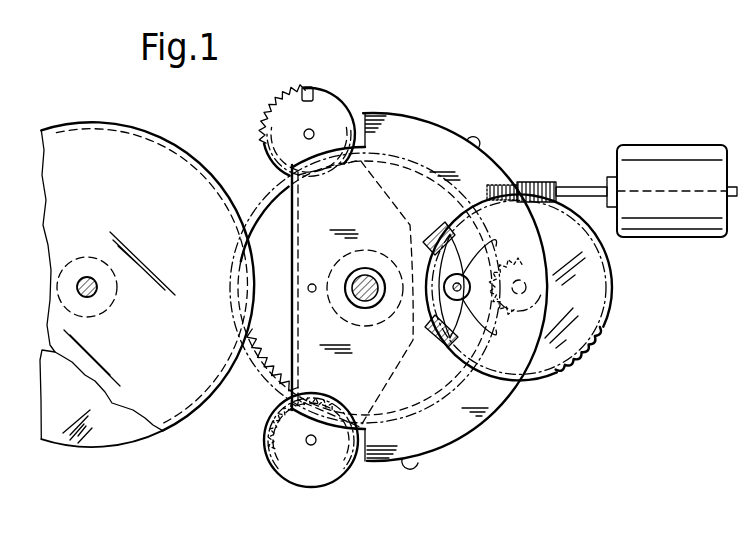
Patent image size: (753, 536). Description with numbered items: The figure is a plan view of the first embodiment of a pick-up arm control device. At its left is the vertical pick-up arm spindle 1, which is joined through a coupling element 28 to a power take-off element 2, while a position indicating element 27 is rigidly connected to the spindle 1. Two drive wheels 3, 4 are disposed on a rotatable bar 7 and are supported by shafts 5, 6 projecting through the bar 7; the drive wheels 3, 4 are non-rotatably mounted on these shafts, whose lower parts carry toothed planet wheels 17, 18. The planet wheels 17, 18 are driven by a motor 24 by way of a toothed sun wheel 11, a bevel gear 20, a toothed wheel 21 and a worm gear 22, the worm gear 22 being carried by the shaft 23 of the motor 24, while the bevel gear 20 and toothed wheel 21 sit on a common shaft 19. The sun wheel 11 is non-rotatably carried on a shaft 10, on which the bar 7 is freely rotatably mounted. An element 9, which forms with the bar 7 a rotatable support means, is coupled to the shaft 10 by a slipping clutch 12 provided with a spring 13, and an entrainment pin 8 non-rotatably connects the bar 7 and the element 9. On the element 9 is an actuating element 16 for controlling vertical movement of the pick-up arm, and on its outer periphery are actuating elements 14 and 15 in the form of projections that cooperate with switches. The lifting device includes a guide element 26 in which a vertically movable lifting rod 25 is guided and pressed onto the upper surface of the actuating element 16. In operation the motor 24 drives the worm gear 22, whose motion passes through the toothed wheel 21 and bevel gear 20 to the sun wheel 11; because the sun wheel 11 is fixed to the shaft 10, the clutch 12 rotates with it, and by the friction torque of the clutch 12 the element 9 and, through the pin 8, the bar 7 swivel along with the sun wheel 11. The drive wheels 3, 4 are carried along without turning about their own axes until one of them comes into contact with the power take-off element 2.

The pick-up arm spindle 1 is at (87, 276).
The power take-off element 2 is at (121, 128).
The drive wheel 3 is at (334, 96).
The drive wheel 4 is at (304, 488).
The shaft 5 is at (310, 129).
The shaft 6 is at (313, 446).
The rotatable bar 7 is at (266, 396).
The entrainment pin 8 is at (312, 284).
The element 9 is at (424, 120).
The shaft 10 is at (372, 306).
The sun wheel 11 is at (275, 221).
The slipping clutch 12 is at (402, 237).
The spring 13 is at (368, 266).
The actuating element 14 is at (475, 138).
The actuating element 15 is at (412, 466).
The actuating element 16 is at (432, 348).
The planet wheel 17 is at (281, 100).
The planet wheel 18 is at (270, 452).
The shaft 19 is at (538, 257).
The bevel gear 20 is at (528, 288).
The toothed wheel 21 is at (596, 345).
The worm gear 22 is at (536, 181).
The motor shaft 23 is at (579, 186).
The motor 24 is at (672, 148).
The lifting rod 25 is at (492, 249).
The guide element 26 is at (492, 325).
The position indicating element 27 is at (112, 436).
The coupling element 28 is at (110, 306).